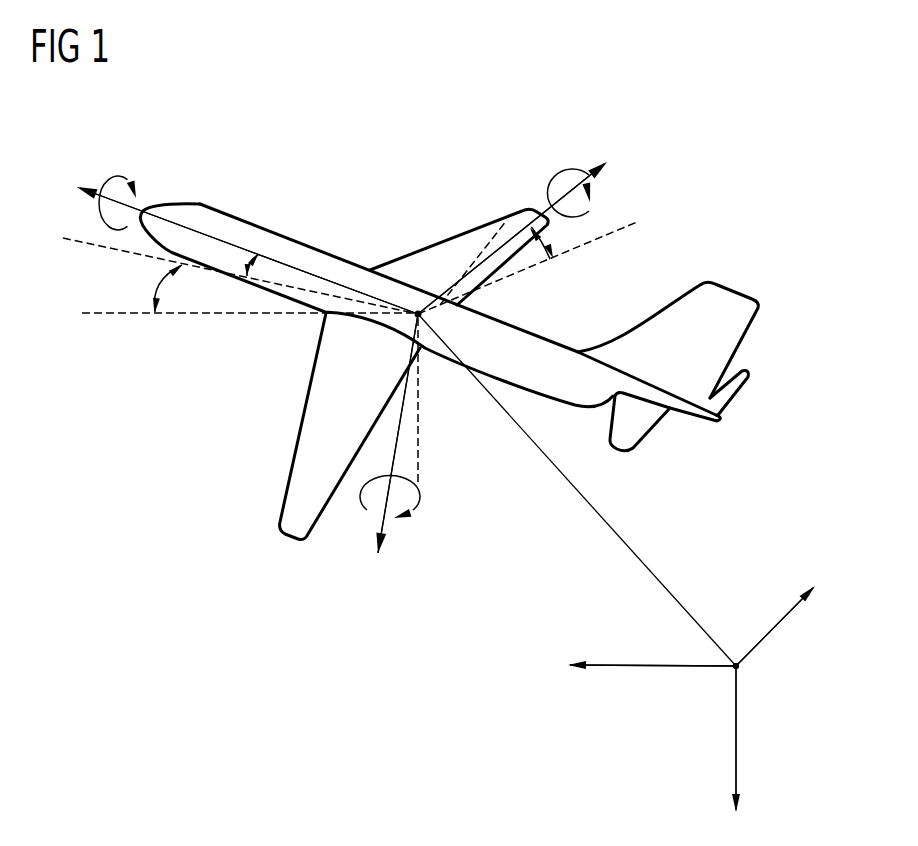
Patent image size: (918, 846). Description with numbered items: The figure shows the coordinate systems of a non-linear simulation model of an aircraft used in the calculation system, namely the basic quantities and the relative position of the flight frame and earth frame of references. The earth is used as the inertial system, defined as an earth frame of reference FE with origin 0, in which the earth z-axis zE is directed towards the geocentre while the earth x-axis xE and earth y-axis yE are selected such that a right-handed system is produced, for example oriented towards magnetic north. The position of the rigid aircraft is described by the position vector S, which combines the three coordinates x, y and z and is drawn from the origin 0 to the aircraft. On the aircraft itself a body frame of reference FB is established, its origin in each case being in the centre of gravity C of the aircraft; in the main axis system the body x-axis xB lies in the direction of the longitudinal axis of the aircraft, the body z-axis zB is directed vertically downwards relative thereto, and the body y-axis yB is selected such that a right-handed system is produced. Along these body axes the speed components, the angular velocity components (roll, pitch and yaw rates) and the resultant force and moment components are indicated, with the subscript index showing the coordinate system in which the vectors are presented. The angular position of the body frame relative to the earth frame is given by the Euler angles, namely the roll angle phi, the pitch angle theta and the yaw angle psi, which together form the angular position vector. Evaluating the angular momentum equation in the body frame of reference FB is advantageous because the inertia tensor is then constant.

The centre of gravity C is at (415, 300).
The body frame of reference FB is at (342, 358).
The body x-axis xB is at (222, 223).
The body y-axis yB is at (523, 222).
The body z-axis zB is at (394, 454).
The position vector S is at (618, 481).
The earth frame of reference FE is at (691, 699).
The origin of the earth frame of reference 0 is at (745, 673).
The earth x-axis xE is at (652, 641).
The earth y-axis yE is at (775, 608).
The earth z-axis zE is at (720, 743).
The yaw angle psi is at (155, 288).
The pitch angle theta is at (239, 260).
The roll angle phi is at (549, 241).